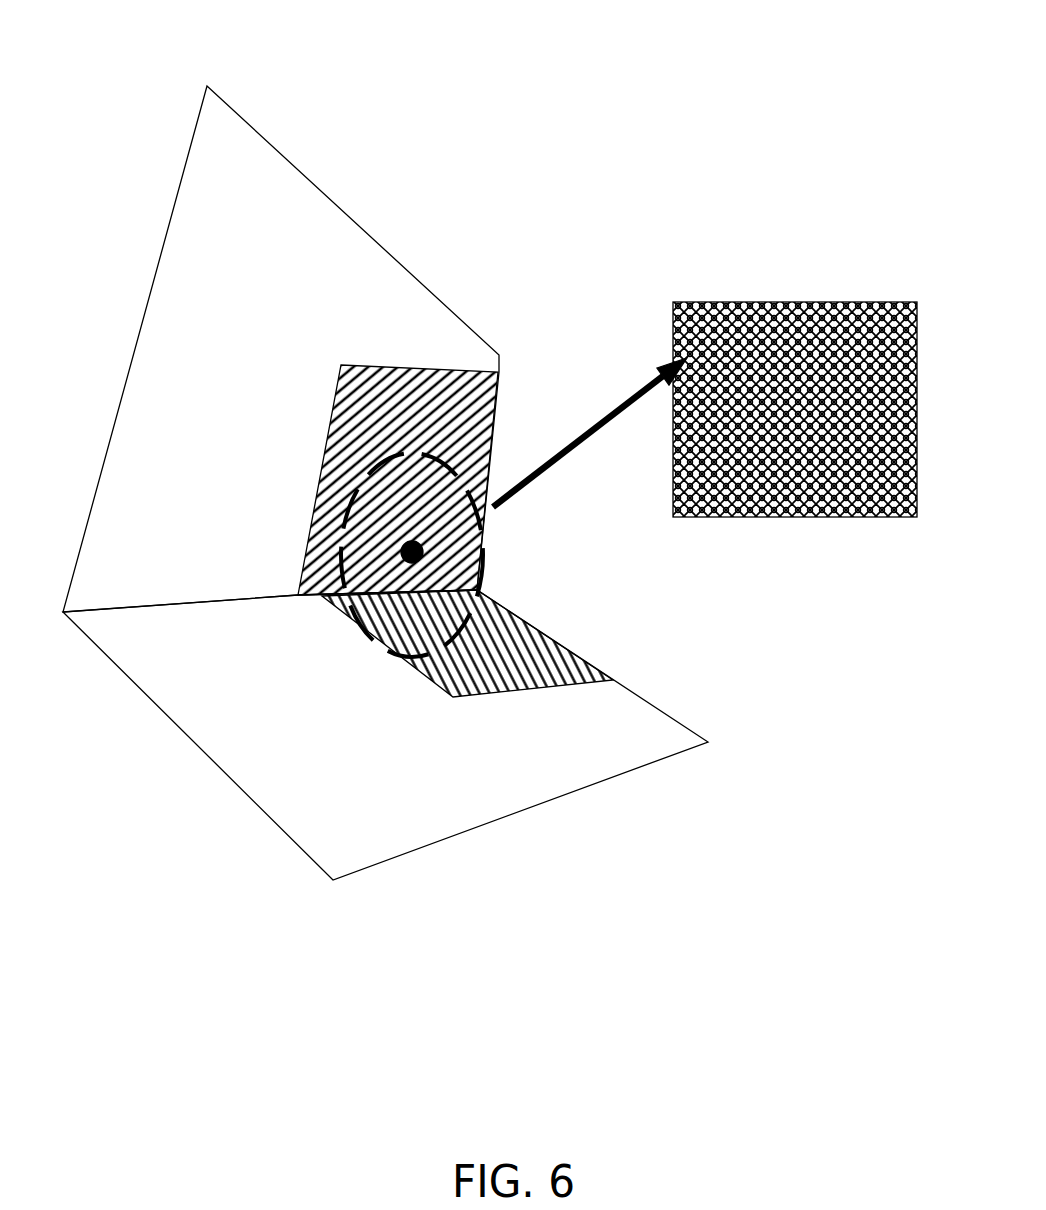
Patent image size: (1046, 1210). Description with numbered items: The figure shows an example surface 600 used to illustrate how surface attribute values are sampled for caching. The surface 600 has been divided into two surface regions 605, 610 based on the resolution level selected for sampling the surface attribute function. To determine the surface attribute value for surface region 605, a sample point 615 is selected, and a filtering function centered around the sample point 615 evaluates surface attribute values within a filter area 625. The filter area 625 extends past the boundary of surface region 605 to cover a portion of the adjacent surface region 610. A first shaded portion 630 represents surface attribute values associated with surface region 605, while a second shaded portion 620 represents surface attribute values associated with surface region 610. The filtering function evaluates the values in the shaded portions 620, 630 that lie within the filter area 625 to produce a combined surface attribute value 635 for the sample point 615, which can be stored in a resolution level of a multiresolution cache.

The surface 600 is at (490, 456).
The surface region 605 is at (281, 349).
The surface region 610 is at (385, 735).
The sample point 615 is at (423, 550).
The second shaded portion 620 is at (583, 657).
The filter area 625 is at (492, 600).
The first shaded portion 630 is at (387, 367).
The combined surface attribute value 635 is at (832, 300).